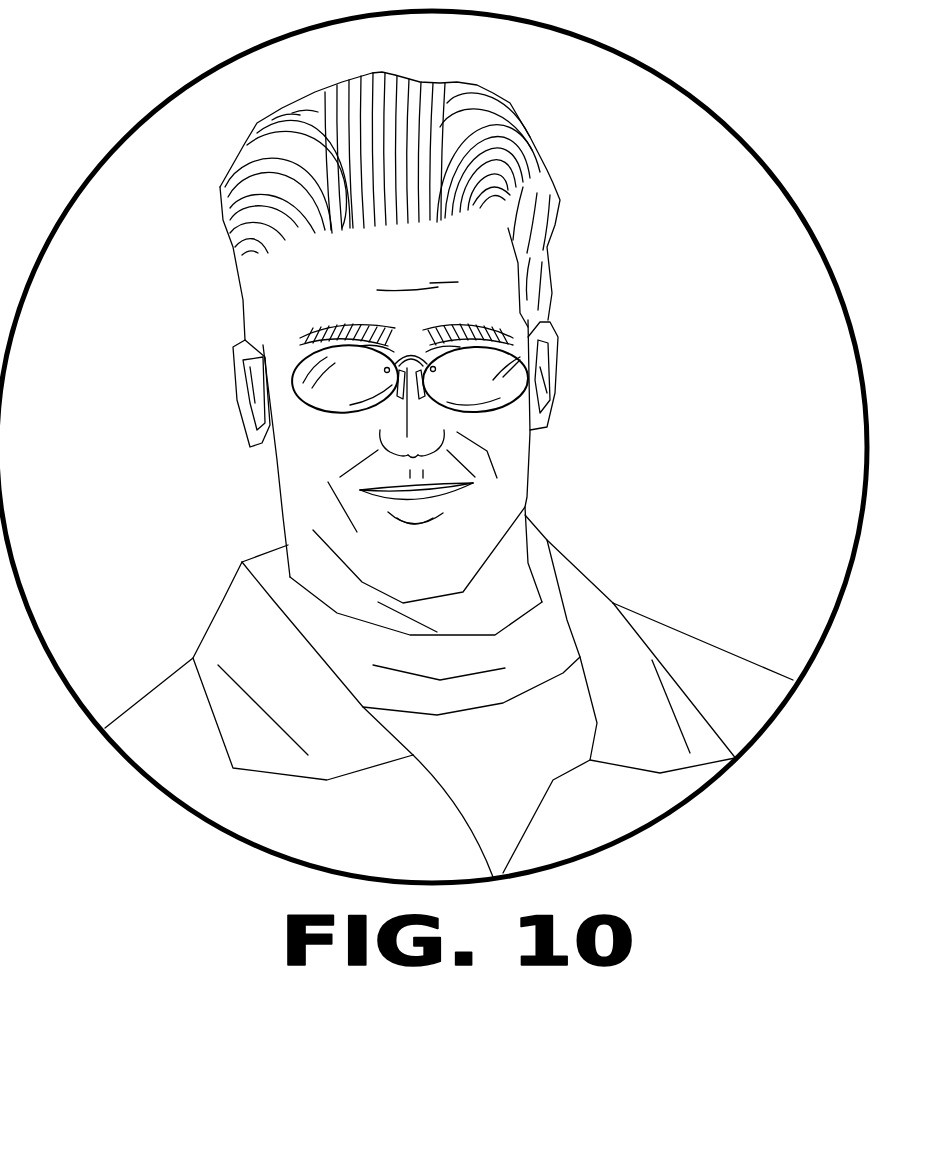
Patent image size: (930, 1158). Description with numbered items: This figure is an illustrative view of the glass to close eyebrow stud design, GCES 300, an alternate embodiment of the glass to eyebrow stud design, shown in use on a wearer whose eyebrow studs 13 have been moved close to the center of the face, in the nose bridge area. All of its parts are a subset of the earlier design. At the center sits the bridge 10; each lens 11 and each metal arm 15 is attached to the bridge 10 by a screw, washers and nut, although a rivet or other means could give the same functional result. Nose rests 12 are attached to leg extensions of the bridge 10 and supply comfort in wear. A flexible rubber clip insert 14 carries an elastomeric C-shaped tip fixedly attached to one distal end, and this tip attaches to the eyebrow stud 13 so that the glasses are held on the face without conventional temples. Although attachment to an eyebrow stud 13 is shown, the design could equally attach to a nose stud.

The glass to close eyebrow stud (GCES) design 300 is at (665, 150).
The bridge 10 is at (413, 390).
The lens 11 is at (513, 392).
The nose rest 12 is at (423, 397).
The eyebrow stud 13 is at (380, 335).
The flexible rubber clip insert 14 is at (383, 347).
The metal arm 15 is at (383, 347).